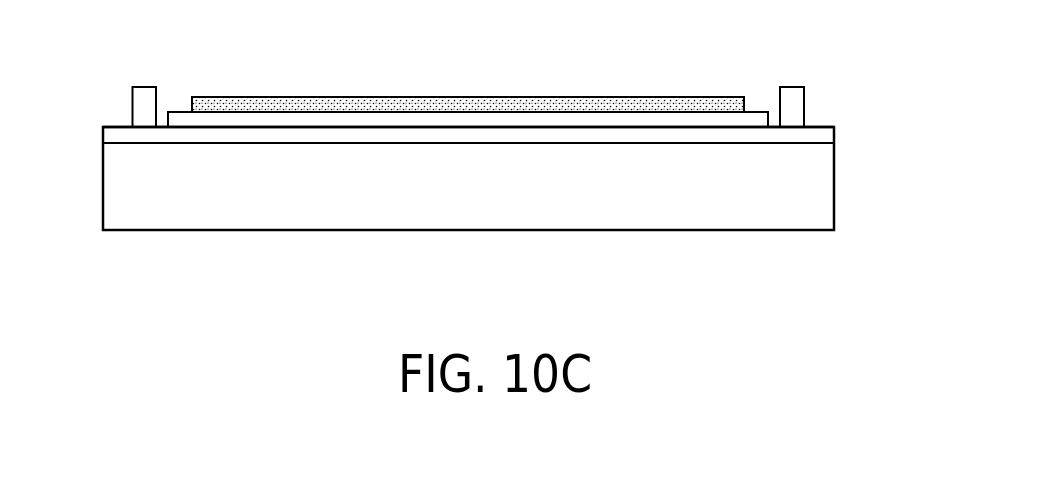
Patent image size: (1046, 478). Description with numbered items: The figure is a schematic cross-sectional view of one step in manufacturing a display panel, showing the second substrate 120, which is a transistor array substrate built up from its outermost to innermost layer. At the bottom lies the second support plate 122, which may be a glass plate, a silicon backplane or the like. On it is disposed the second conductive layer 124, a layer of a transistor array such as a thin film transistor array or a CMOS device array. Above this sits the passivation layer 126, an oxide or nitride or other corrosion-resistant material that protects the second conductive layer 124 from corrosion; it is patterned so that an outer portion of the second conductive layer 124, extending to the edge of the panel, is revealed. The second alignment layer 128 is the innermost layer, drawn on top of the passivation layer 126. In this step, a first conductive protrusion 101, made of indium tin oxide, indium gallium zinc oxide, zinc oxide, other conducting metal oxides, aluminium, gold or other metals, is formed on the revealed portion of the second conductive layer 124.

The first conductive protrusion 101 is at (145, 108).
The second substrate 120 is at (907, 52).
The second support plate 122 is at (818, 187).
The second conductive layer 124 is at (818, 137).
The passivation layer 126 is at (752, 121).
The second alignment layer 128 is at (733, 105).